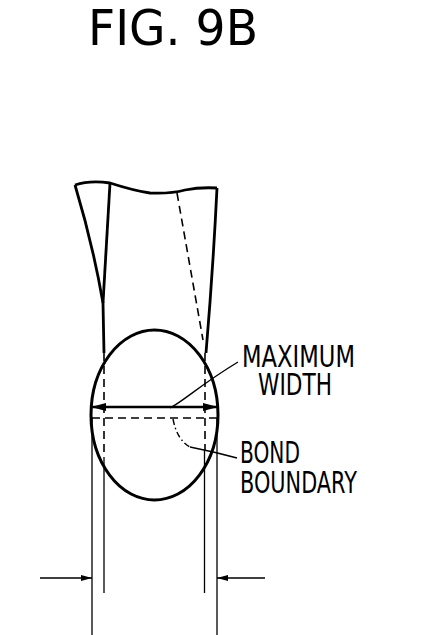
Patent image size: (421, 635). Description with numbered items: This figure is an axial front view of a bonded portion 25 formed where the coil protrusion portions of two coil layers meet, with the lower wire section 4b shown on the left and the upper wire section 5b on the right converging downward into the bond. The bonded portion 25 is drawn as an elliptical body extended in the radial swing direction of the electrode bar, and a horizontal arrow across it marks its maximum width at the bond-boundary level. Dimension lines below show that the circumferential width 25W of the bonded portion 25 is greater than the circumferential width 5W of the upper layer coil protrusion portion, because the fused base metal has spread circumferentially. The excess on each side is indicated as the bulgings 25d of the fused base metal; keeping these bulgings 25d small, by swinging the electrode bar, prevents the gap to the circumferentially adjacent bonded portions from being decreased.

The first bonding wire (lead portion) 4b is at (86, 239).
The second bonding wire (lead portion) 5b is at (217, 240).
The bonded portion 25 is at (151, 504).
The bulgings of the fused base metal 25d is at (153, 561).
The circumferential width of the bonded portion 25W is at (217, 622).
The circumferential width of the upper layer coil protrusion portion 5W is at (204, 578).